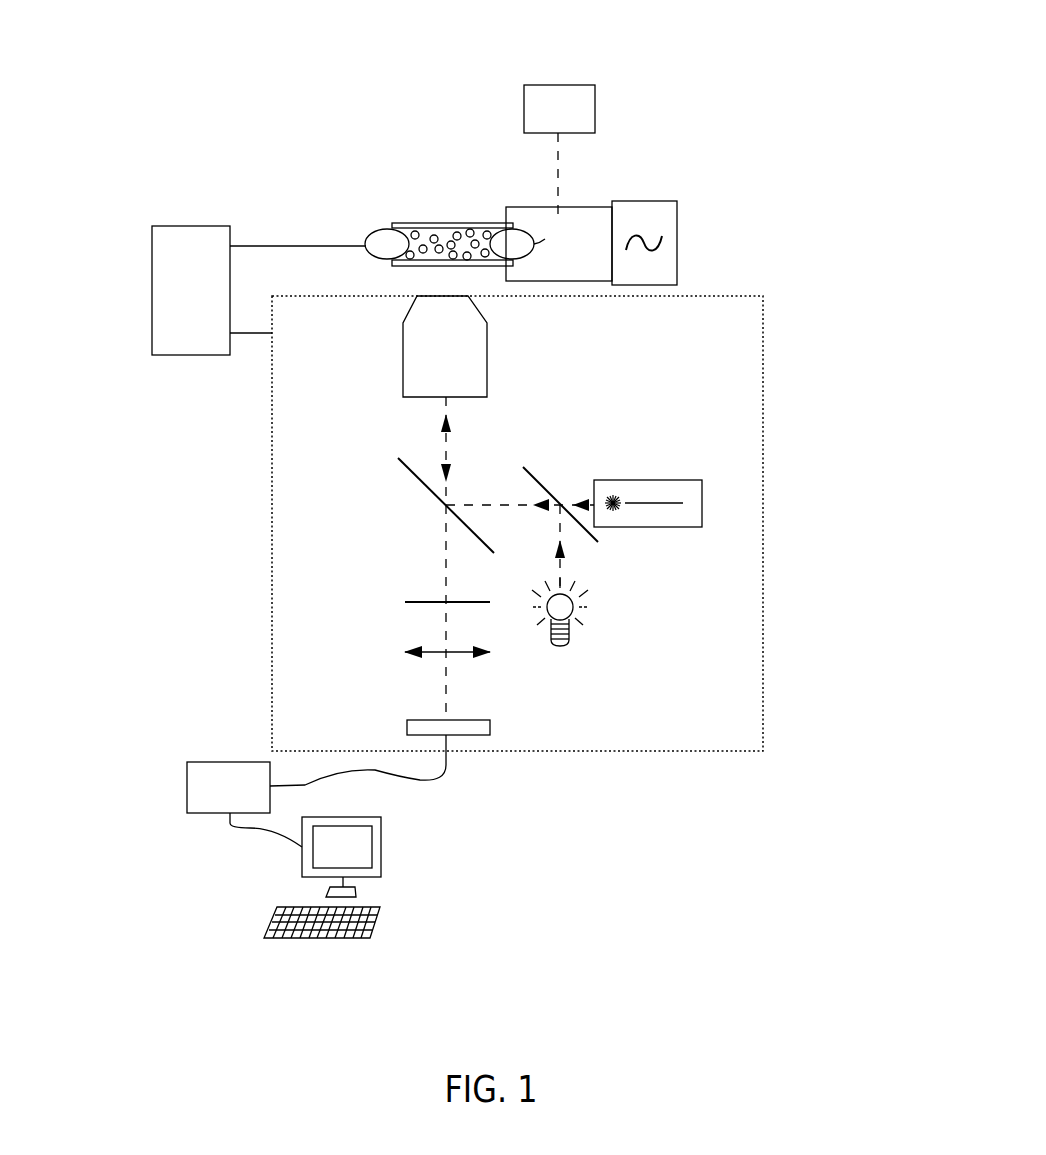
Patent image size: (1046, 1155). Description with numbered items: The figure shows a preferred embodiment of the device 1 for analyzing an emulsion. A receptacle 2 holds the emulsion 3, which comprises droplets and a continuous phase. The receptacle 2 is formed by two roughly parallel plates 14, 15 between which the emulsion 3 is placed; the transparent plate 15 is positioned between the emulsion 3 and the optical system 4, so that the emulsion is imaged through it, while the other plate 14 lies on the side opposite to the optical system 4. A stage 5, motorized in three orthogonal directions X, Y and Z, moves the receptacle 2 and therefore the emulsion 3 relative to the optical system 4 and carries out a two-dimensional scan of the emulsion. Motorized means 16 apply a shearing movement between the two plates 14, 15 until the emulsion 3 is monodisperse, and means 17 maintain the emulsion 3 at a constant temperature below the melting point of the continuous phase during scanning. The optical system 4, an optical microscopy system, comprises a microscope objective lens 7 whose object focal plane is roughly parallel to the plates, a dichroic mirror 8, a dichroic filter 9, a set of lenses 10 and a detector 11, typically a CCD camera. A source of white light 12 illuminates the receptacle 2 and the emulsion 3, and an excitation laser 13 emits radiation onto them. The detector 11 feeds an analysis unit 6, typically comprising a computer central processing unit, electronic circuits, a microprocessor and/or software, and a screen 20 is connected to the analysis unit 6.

The device 1 is at (248, 92).
The receptacle 2 is at (406, 187).
The emulsion 3 is at (465, 236).
The optical system 4 is at (765, 560).
The stage 5 is at (152, 332).
The analysis unit 6 is at (215, 765).
The microscope objective lens 7 is at (480, 335).
The dichroic mirror 8 is at (412, 473).
The dichroic filter 9 is at (410, 600).
The set of lenses 10 is at (405, 655).
The detector 11 is at (407, 726).
The source of white light 12 is at (570, 632).
The excitation laser 13 is at (678, 485).
The plate 14 is at (428, 224).
The transparent plate 15 is at (395, 264).
The motorized means 16 is at (660, 213).
The means for maintaining temperature 17 is at (588, 96).
The screen 20 is at (382, 866).